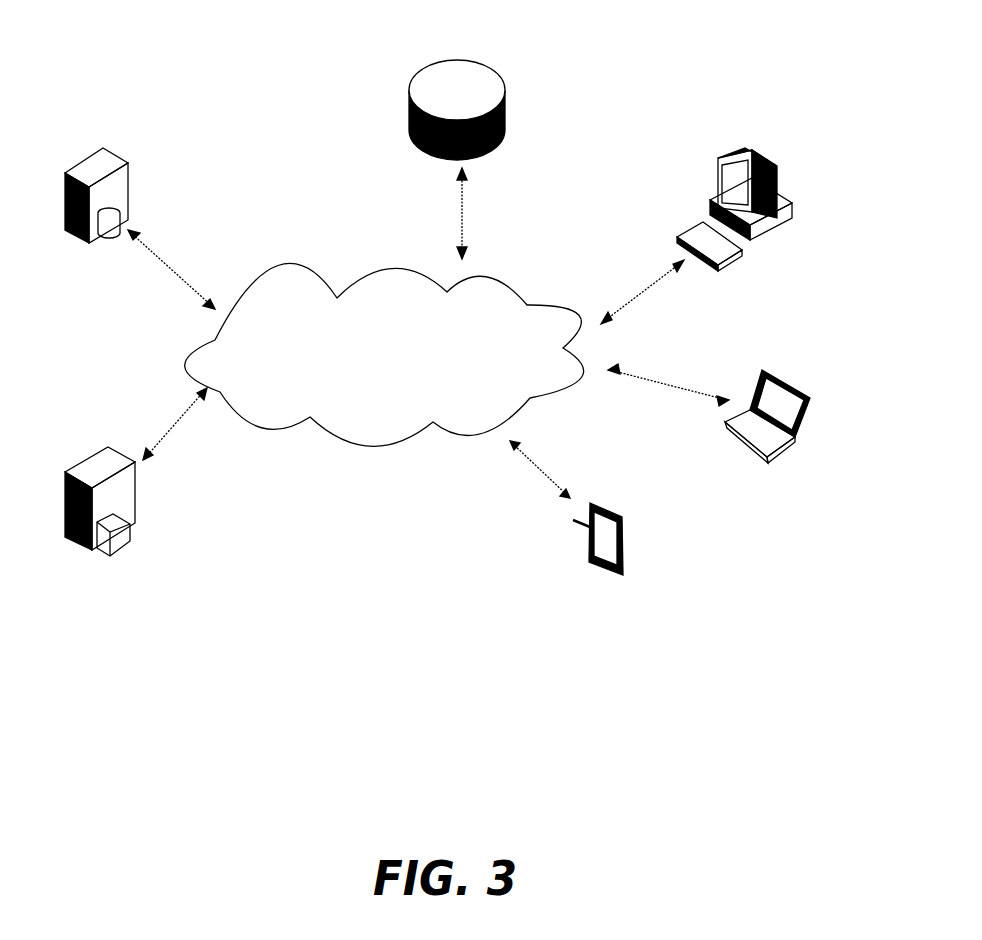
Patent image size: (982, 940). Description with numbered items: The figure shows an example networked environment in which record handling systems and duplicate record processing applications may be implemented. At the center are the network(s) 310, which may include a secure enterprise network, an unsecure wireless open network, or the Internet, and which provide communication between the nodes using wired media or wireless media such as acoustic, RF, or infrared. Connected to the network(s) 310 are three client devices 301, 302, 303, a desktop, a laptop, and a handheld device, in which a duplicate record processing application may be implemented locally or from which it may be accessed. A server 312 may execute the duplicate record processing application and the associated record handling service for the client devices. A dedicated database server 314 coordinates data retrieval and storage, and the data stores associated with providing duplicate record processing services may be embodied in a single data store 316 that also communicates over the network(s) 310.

The client device 301 is at (775, 143).
The client device 302 is at (810, 372).
The client device 303 is at (620, 500).
The network(s) 310 is at (300, 268).
The server 312 is at (103, 560).
The database server 314 is at (105, 245).
The data store 316 is at (472, 36).